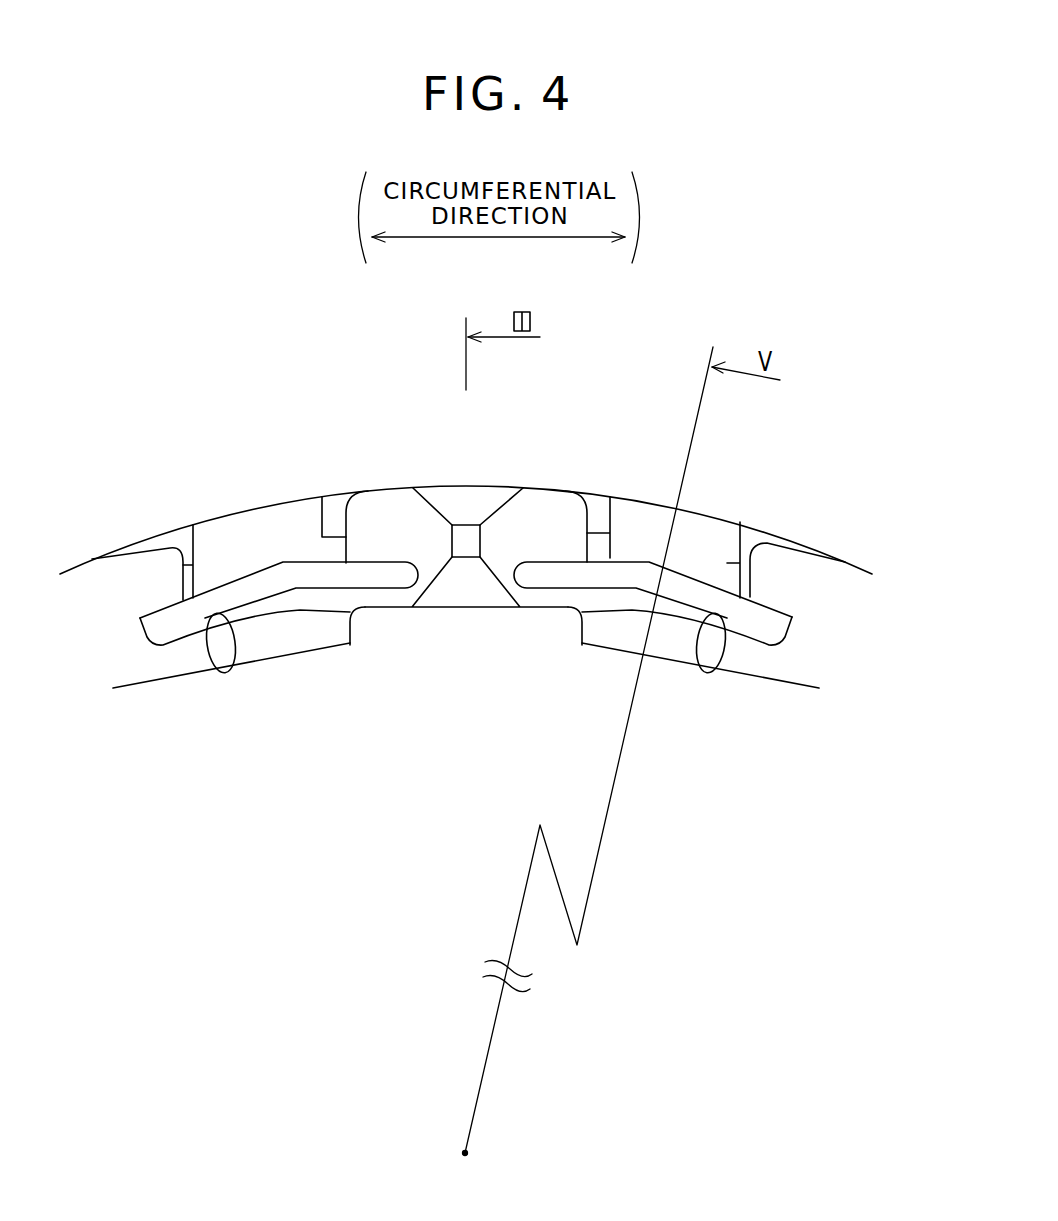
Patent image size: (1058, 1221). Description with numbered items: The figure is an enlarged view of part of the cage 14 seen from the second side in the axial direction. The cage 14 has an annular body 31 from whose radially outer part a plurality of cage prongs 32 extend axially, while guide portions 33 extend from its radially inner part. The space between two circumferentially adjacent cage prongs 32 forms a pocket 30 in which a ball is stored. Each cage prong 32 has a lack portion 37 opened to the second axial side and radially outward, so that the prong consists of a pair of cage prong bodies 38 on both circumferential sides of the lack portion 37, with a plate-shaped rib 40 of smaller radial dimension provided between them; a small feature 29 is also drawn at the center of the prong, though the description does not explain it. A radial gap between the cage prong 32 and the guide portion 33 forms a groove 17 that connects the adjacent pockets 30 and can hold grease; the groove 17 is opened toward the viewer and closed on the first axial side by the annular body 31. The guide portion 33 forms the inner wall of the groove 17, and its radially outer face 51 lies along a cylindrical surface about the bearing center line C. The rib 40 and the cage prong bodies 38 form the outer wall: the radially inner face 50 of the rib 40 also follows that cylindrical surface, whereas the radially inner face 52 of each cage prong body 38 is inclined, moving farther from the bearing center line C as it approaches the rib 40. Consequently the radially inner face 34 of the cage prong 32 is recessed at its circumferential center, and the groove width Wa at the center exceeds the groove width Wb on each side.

The cage 14 is at (813, 540).
The groove 17 is at (290, 583).
The marker 29 is at (465, 540).
The pocket 30 is at (93, 590).
The annular body 31 is at (468, 610).
The cage prong 32 is at (320, 490).
The guide portion 33 is at (255, 650).
The radially inner face of the cage prong 34 is at (363, 610).
The lack portion 37 is at (295, 517).
The cage prong body 38 is at (193, 527).
The rib 40 is at (318, 630).
The radially inner face of the rib 50 is at (229, 668).
The radially outer face of the guide portion 51 is at (278, 600).
The radially inner face of the cage prong body 52 is at (205, 618).
The groove width at the circumferential center Wa is at (266, 622).
The groove width on each side Wb is at (210, 673).
The bearing center line C is at (468, 1153).